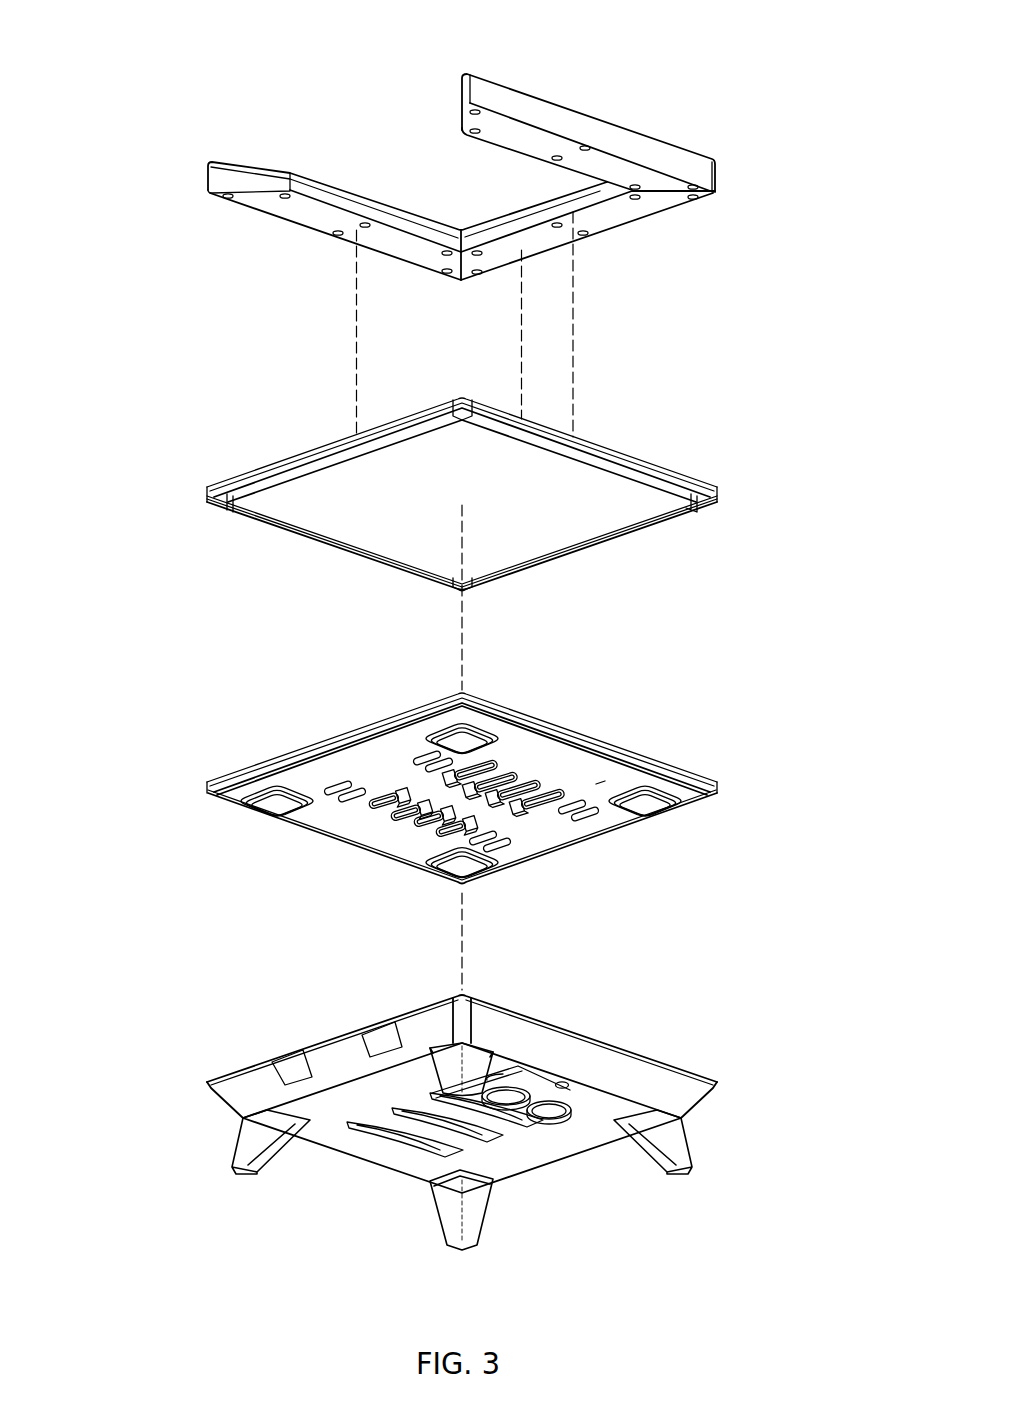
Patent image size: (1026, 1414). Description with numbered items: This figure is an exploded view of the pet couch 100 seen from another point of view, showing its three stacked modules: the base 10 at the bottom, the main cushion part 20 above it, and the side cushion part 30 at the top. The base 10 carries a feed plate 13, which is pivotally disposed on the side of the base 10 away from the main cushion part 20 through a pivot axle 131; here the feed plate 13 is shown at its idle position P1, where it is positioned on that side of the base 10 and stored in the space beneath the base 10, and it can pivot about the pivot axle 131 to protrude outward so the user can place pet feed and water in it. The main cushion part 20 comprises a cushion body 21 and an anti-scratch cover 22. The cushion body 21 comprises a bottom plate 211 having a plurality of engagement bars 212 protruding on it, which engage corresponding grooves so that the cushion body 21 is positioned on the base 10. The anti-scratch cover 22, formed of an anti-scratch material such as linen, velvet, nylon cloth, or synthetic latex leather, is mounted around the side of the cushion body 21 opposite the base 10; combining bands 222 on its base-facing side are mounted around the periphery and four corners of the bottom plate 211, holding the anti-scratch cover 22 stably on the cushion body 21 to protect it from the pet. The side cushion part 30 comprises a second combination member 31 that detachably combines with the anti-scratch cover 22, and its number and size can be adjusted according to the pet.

The pet couch 100 is at (80, 30).
The base 10 is at (486, 1112).
The feed plate 13 is at (585, 1103).
The pivot axle 131 is at (567, 1083).
The idle position P1 is at (566, 1130).
The main cushion part 20 is at (103, 420).
The cushion body 21 is at (416, 781).
The bottom plate 211 is at (597, 782).
The engagement bars 212 is at (528, 786).
The anti-scratch cover 22 is at (446, 494).
The combining band 222 is at (698, 513).
The side cushion part 30 is at (496, 167).
The second combination member 31 is at (698, 201).